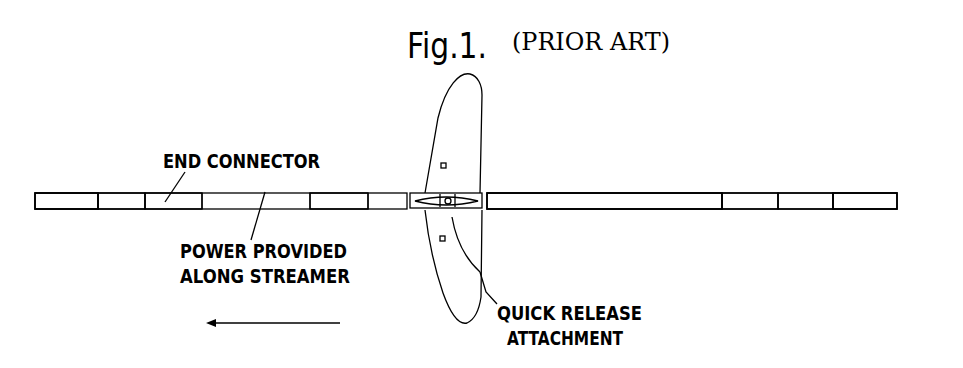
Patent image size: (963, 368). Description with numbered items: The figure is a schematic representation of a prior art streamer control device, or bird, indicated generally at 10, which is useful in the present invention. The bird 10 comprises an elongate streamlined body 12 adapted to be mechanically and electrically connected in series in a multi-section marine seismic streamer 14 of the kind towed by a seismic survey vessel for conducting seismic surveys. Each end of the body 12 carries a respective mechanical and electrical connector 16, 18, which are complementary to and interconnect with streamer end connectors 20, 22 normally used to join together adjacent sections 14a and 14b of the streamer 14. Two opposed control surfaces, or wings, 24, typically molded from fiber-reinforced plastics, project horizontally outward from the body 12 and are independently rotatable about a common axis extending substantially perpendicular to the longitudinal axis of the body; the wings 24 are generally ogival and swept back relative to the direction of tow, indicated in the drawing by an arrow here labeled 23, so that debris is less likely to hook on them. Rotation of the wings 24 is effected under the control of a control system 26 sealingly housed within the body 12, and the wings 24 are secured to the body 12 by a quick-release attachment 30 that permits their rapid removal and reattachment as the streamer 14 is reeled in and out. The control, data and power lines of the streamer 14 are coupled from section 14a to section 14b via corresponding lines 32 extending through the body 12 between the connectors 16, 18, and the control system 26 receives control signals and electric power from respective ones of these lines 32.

The streamer control device 10 is at (602, 130).
The elongate streamlined body 12 is at (558, 209).
The multi-section marine seismic streamer 14 is at (63, 212).
The streamer section 14a is at (64, 193).
The streamer section 14b is at (862, 196).
The mechanical and electrical connector 16 is at (152, 210).
The mechanical and electrical connector 18 is at (755, 203).
The streamer end connector 20 is at (121, 197).
The streamer end connector 22 is at (808, 197).
The tow direction arrow 23 is at (284, 322).
The wings 24 is at (458, 100).
The control system 26 is at (349, 197).
The quick-release attachment 30 is at (452, 193).
The lines 32 is at (683, 195).